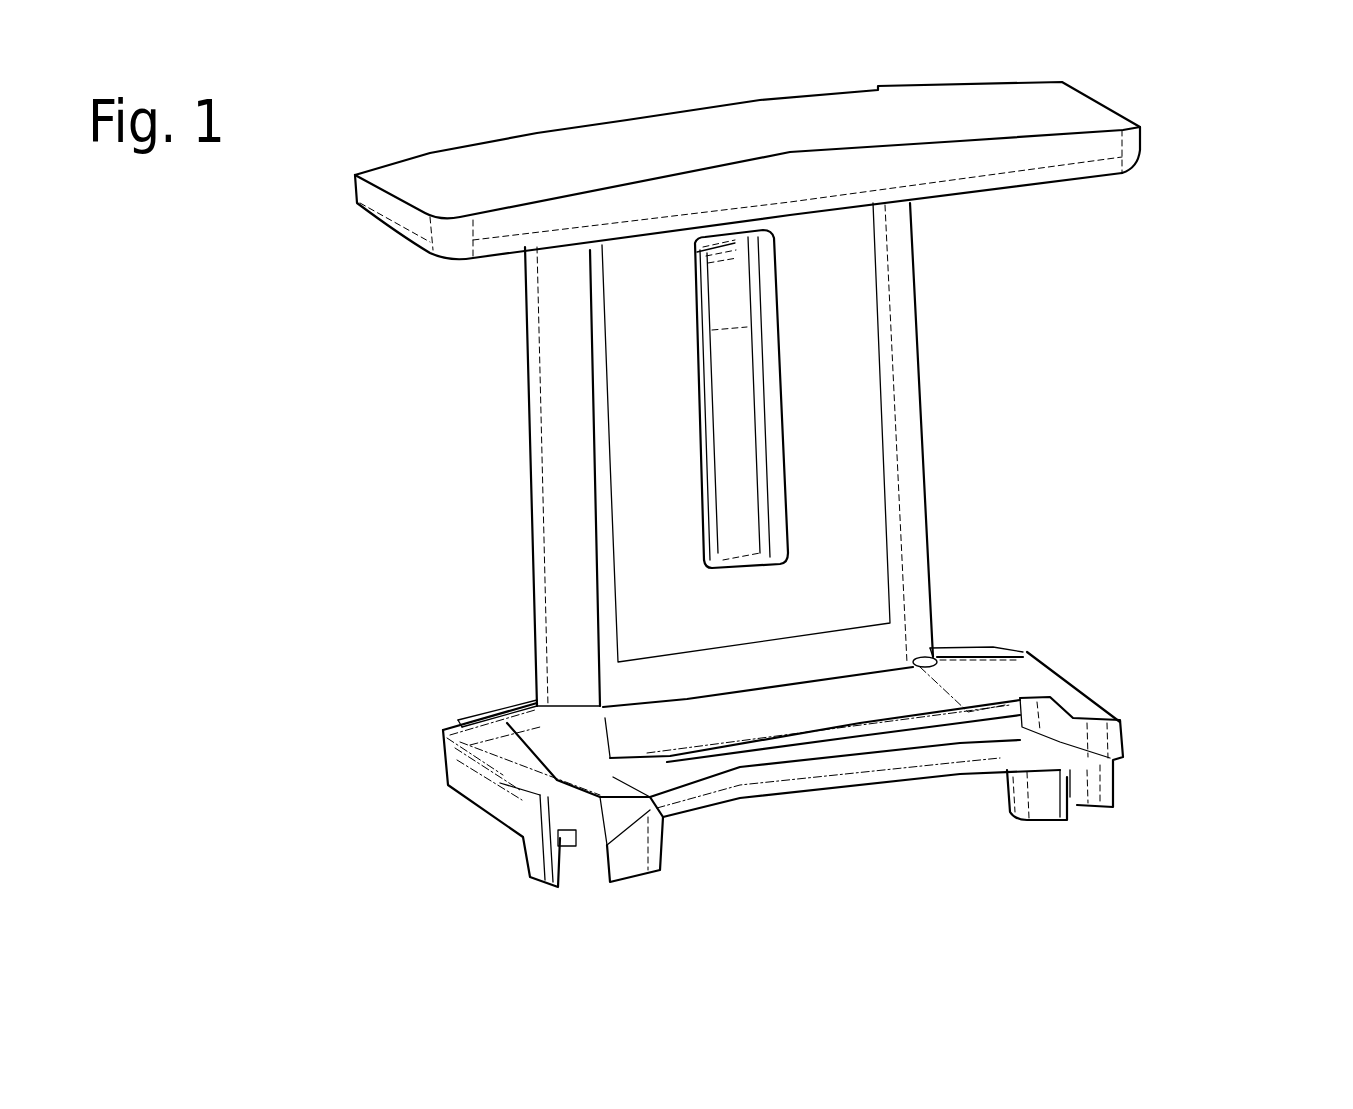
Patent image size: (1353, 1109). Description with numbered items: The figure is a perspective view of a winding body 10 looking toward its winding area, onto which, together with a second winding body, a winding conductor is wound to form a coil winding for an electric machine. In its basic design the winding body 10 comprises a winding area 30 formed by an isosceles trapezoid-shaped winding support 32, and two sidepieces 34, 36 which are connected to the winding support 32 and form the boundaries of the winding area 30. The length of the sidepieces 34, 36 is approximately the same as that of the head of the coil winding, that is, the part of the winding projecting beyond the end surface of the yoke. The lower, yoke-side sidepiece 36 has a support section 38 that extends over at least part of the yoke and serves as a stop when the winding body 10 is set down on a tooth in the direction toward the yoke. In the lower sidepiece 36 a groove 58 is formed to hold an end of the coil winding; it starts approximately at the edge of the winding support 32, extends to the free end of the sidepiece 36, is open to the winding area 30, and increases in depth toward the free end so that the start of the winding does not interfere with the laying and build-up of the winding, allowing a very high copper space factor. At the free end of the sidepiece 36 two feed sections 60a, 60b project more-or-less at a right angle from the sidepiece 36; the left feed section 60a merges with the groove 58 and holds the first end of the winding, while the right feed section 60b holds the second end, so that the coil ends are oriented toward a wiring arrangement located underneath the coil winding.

The winding body 10 is at (1117, 432).
The winding area 30 is at (672, 552).
The winding support 32 is at (853, 502).
The sidepiece 34 is at (1140, 150).
The sidepiece 36 is at (1053, 690).
The support section 38 is at (478, 718).
The groove 58 is at (553, 747).
The feed section 60a is at (580, 860).
The feed section 60b is at (1073, 800).